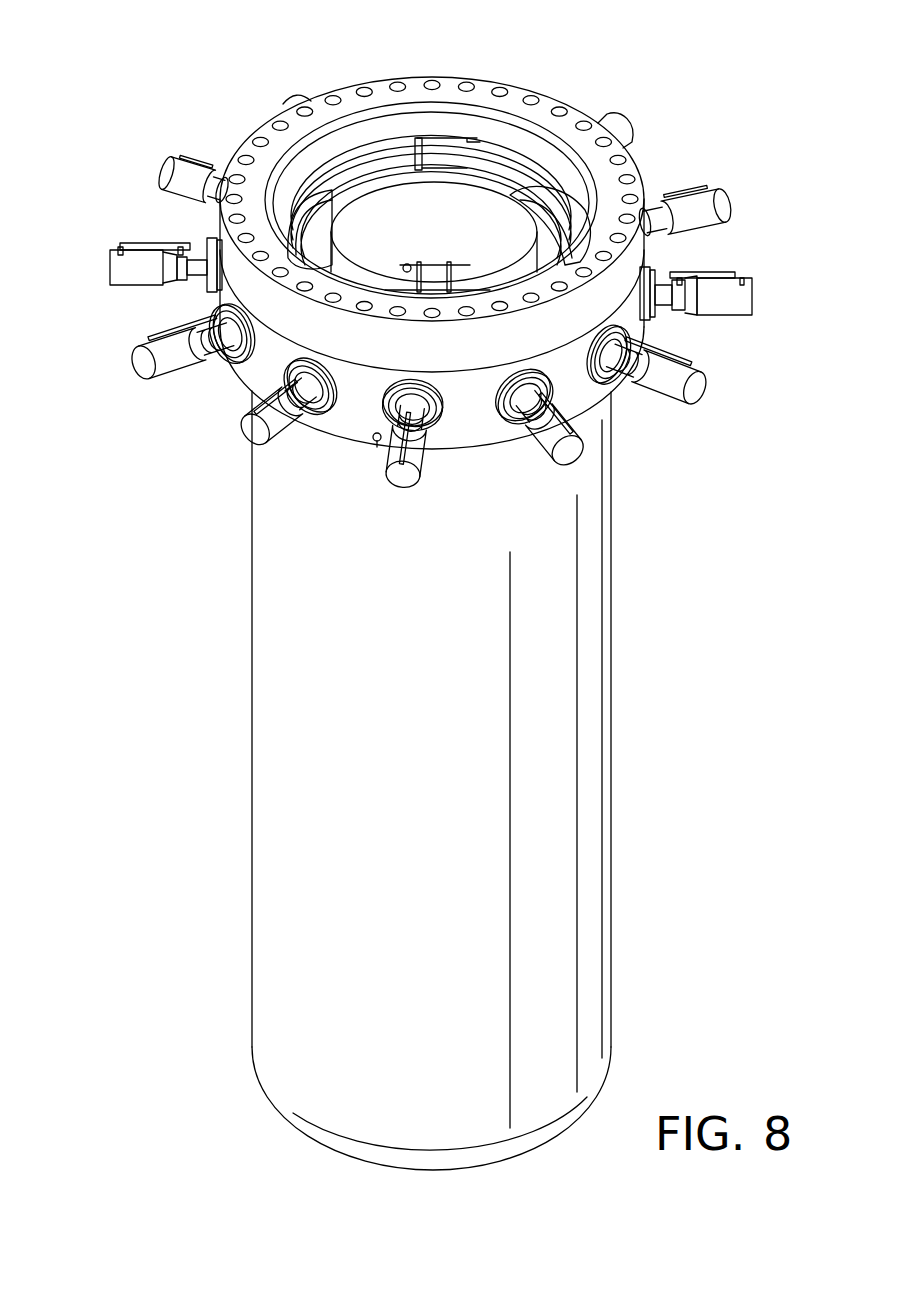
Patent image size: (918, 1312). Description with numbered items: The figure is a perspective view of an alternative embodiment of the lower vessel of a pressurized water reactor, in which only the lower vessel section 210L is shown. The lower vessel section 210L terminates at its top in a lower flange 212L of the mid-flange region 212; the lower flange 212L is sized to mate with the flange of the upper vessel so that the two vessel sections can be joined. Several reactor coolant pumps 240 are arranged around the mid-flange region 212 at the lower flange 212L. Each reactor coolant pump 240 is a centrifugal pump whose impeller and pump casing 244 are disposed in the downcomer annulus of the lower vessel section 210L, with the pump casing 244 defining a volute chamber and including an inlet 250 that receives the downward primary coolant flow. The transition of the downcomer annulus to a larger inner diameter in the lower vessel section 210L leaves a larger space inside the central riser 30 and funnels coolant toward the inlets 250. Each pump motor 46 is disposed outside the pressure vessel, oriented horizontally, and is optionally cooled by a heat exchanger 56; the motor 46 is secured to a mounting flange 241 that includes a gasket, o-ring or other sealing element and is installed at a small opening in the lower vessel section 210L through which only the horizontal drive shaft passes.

The central riser 30 is at (488, 210).
The pump motor 46 is at (147, 370).
The heat exchanger 56 is at (183, 330).
The lower vessel section 210L is at (592, 807).
The mid-flange region 212 is at (733, 145).
The lower flange 212L is at (475, 410).
The reactor coolant pump 240 is at (243, 459).
The mounting flange 241 is at (243, 363).
The pump casing 244 is at (307, 195).
The inlet 250 is at (320, 208).